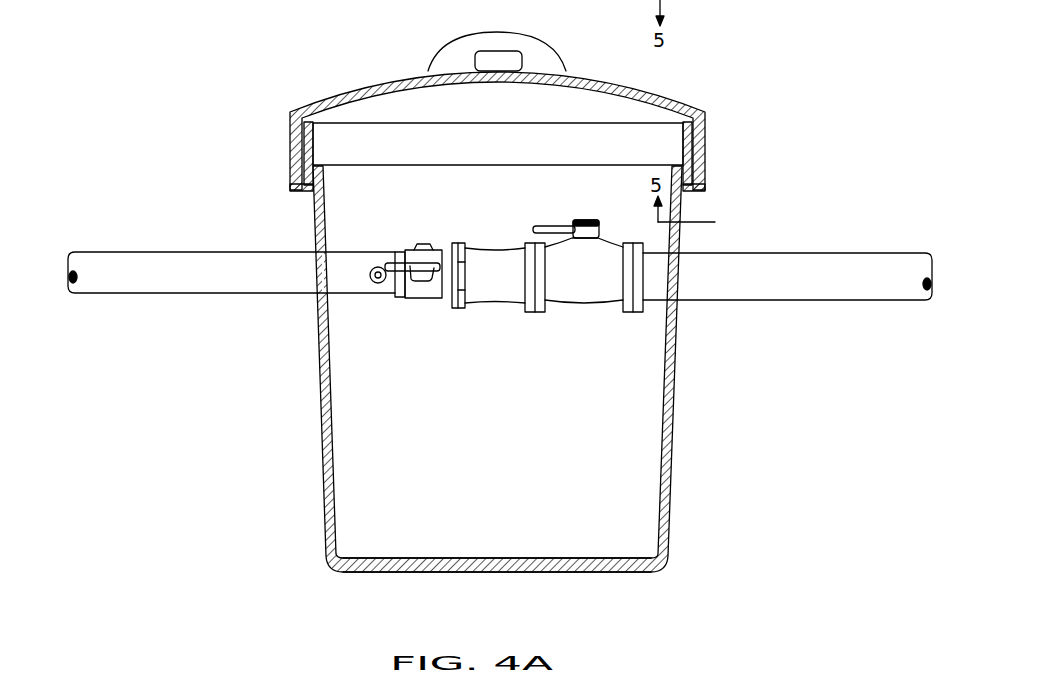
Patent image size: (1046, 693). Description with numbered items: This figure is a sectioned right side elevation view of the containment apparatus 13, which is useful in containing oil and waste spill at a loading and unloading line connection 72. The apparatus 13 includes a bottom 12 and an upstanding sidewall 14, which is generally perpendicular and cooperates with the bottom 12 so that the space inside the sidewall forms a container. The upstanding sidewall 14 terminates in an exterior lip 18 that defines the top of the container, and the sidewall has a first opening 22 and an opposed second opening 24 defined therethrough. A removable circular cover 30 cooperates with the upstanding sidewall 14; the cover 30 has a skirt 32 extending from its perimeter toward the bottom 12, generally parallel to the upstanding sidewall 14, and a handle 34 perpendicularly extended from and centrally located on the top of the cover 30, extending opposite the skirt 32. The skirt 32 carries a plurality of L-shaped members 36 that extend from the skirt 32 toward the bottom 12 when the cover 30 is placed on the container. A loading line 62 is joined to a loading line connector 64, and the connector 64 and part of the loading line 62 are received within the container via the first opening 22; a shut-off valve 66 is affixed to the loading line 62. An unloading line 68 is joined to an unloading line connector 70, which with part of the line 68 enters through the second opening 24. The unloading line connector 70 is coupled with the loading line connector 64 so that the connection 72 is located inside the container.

The bottom 12 is at (518, 572).
The containment apparatus 13 is at (760, 112).
The upstanding sidewall 14 is at (677, 437).
The exterior lip 18 is at (452, 150).
The first opening 22 is at (680, 250).
The second opening 24 is at (315, 242).
The removable circular cover 30 is at (615, 84).
The skirt 32 is at (290, 151).
The handle 34 is at (540, 45).
The L-shaped members 36 is at (290, 190).
The loading line 62 is at (810, 300).
The loading line connector 64 is at (462, 310).
The shut-off valve 66 is at (575, 312).
The unloading line 68 is at (200, 294).
The unloading line connector 70 is at (425, 244).
The loading and unloading line connection 72 is at (418, 298).